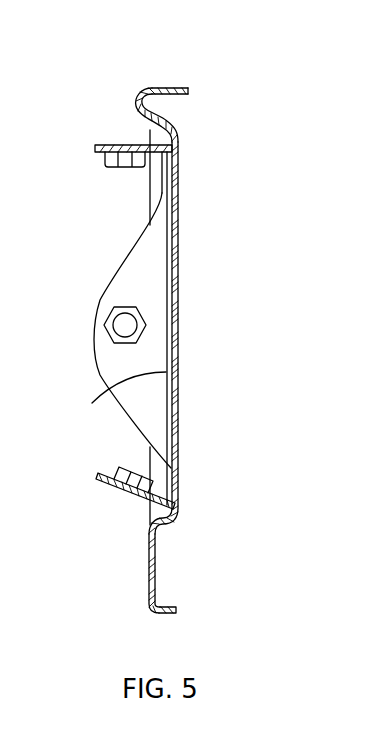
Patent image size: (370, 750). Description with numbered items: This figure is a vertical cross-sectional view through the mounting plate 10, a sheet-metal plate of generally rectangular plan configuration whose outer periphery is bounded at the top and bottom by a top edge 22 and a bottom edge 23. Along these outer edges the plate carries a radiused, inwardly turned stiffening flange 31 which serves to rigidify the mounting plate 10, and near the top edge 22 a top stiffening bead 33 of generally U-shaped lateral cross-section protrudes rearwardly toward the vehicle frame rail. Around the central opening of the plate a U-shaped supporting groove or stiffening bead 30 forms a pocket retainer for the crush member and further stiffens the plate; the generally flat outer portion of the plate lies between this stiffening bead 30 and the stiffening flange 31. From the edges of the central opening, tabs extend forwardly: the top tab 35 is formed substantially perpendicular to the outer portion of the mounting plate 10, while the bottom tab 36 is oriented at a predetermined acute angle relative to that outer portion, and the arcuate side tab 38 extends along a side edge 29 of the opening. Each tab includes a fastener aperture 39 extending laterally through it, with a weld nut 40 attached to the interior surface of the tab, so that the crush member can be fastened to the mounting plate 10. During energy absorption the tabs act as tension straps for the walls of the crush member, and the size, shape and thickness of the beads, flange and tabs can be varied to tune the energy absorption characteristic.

The mounting plate 10 is at (156, 337).
The top edge 22 is at (188, 88).
The bottom edge 23 is at (152, 611).
The side edge 29 is at (92, 403).
The stiffening bead 30 is at (178, 138).
The stiffening flange 31 is at (145, 86).
The top stiffening bead 33 is at (138, 107).
The top tab 35 is at (103, 144).
The bottom tab 36 is at (143, 503).
The side tab 38 is at (107, 358).
The fastener aperture 39 is at (125, 310).
The weld nut 40 is at (122, 168).